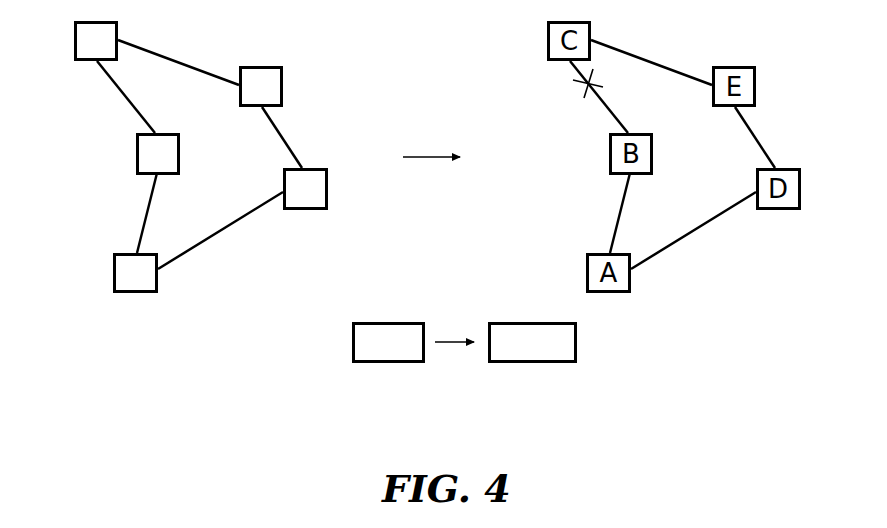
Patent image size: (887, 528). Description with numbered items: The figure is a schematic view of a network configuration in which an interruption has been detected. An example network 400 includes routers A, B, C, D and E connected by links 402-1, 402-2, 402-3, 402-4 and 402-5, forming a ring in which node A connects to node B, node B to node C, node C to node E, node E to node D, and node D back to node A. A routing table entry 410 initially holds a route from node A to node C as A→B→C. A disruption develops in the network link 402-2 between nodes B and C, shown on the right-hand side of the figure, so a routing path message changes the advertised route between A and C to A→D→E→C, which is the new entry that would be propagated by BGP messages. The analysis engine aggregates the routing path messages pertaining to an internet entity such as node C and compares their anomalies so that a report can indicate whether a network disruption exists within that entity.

The network 400 is at (217, 250).
The link 402-1 is at (146, 211).
The network link 402-2 is at (130, 104).
The link 402-3 is at (180, 62).
The link 402-4 is at (285, 133).
The link 402-5 is at (235, 225).
The routing table entry 410 is at (340, 346).